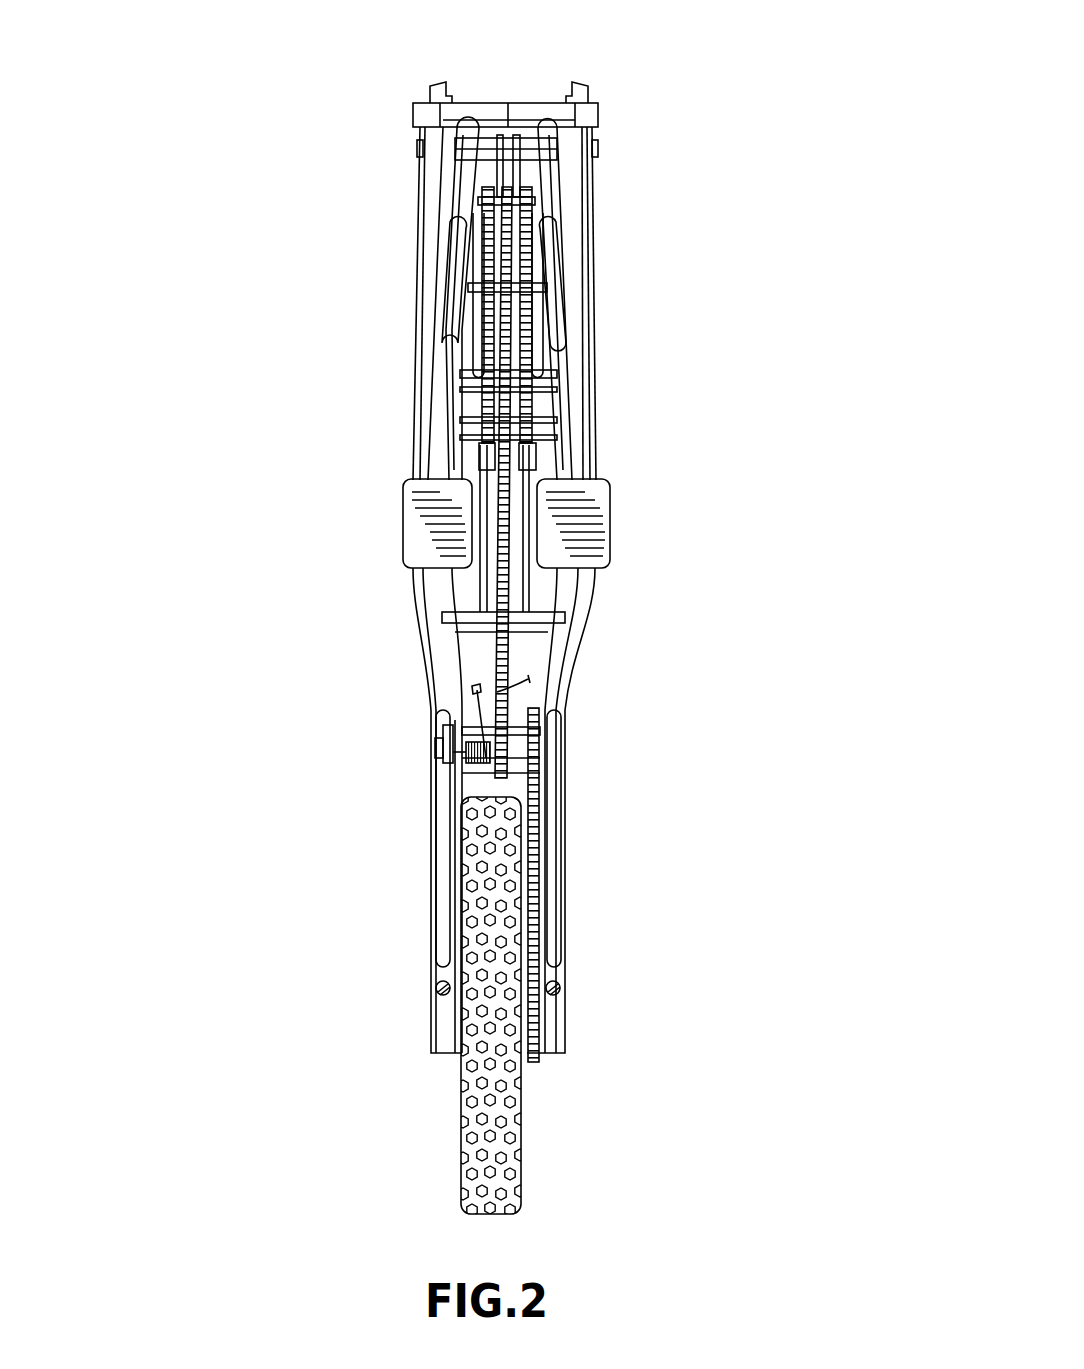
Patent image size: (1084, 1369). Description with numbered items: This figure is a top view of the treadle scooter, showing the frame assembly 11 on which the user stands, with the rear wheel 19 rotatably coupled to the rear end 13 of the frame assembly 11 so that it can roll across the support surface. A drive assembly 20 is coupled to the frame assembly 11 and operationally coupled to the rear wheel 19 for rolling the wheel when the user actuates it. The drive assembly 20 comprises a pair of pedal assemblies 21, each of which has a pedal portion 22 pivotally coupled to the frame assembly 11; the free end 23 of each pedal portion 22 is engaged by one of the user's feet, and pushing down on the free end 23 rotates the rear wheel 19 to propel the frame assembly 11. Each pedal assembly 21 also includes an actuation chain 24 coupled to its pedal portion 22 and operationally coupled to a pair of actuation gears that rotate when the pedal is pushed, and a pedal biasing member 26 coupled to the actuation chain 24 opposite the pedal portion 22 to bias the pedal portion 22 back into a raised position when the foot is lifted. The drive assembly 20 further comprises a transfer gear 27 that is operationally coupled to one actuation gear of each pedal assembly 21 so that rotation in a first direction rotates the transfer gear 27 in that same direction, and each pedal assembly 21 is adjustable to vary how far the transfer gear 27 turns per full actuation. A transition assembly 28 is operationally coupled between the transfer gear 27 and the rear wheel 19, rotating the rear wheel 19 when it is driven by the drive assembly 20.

The frame assembly 11 is at (587, 668).
The rear end 13 is at (547, 1027).
The rear wheel 19 is at (486, 1107).
The drive assembly 20 is at (607, 126).
The pedal assemblies 21 is at (618, 489).
The pedal portion 22 is at (565, 383).
The free end 23 is at (585, 542).
The actuation chain 24 is at (523, 348).
The pedal biasing member 26 is at (520, 595).
The transfer gear 27 is at (540, 226).
The transition assembly 28 is at (476, 777).